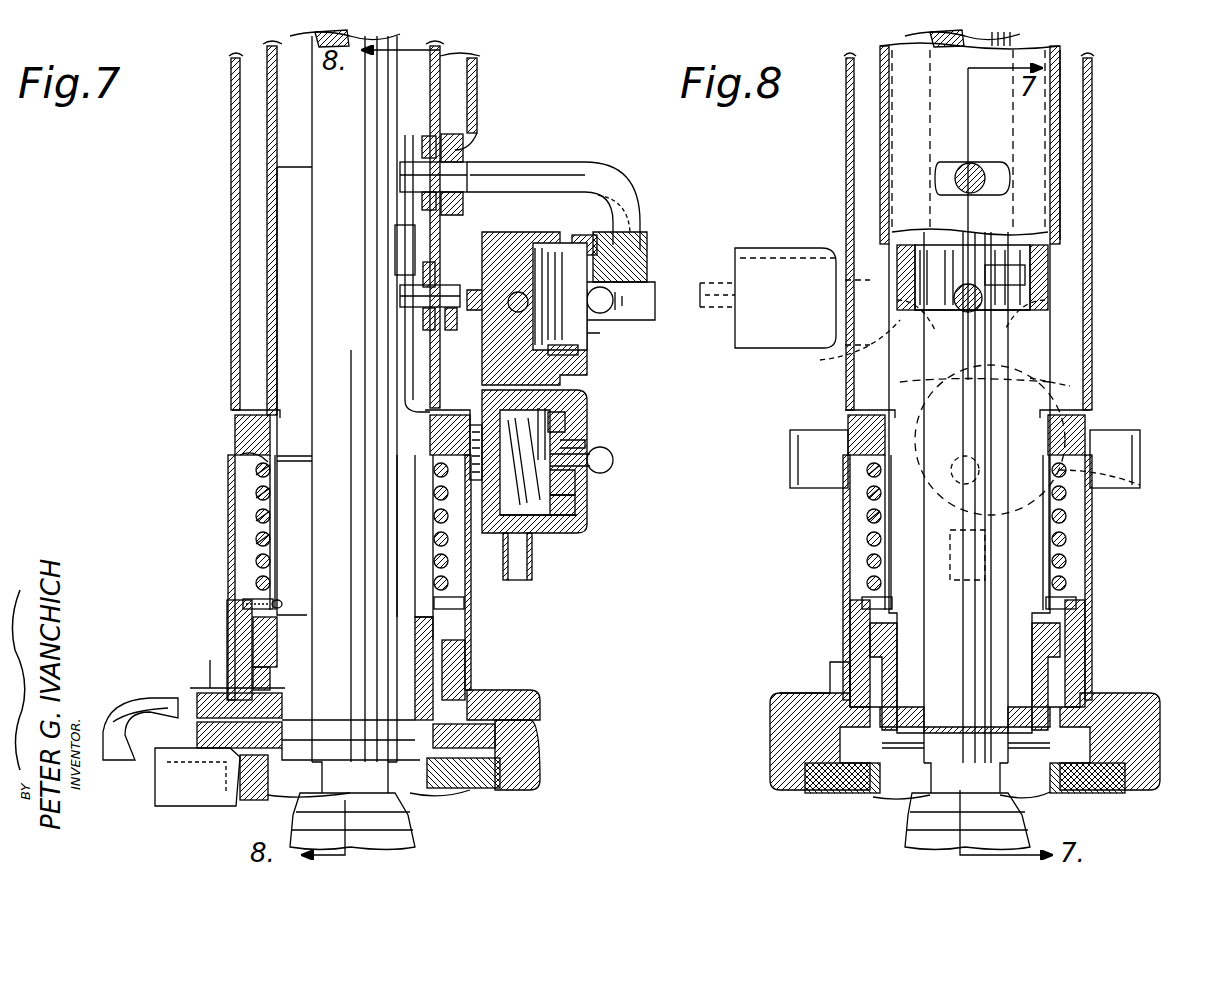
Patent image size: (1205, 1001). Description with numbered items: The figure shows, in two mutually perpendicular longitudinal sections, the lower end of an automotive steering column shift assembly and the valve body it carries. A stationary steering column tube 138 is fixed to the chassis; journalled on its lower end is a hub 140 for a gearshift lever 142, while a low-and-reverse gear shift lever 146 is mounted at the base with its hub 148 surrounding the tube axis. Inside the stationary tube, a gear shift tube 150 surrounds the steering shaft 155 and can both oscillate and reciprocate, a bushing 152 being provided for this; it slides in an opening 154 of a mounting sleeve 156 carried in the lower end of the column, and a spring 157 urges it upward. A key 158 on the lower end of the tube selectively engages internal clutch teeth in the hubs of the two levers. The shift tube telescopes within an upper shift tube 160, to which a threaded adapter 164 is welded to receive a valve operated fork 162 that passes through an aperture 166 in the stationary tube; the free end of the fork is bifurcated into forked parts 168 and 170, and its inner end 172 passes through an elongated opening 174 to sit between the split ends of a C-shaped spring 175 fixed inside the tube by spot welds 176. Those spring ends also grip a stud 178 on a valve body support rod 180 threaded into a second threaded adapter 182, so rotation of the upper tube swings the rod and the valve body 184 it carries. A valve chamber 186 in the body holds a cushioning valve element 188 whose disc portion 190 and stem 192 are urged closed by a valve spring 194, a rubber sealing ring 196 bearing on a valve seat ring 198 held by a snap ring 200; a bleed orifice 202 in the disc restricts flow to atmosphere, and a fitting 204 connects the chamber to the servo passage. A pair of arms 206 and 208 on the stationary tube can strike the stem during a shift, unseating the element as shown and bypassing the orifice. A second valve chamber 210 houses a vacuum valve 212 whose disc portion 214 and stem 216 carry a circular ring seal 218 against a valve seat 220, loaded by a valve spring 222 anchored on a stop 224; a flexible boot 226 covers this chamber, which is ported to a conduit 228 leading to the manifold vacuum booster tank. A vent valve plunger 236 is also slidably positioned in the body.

In FIG. 7, the steering column tube 138 is at (236, 398).
In FIG. 8, the steering column tube 138 is at (1090, 215).
In FIG. 7, the hub 140 is at (212, 690).
In FIG. 8, the hub 140 is at (828, 690).
In FIG. 7, the gearshift lever 142 is at (145, 705).
In FIG. 7, the low-and-reverse gear shift lever 146 is at (232, 805).
In FIG. 7, the hub 148 is at (472, 788).
In FIG. 8, the hub 148 is at (835, 772).
In FIG. 7, the gear shift tube 150 is at (254, 455).
In FIG. 8, the gear shift tube 150 is at (980, 302).
In FIG. 7, the bushing 152 is at (238, 422).
In FIG. 8, the bushing 152 is at (848, 420).
In FIG. 7, the opening 154 is at (260, 598).
In FIG. 7, the steering shaft 155 is at (318, 537).
In FIG. 8, the steering shaft 155 is at (935, 537).
In FIG. 7, the mounting sleeve 156 is at (238, 620).
In FIG. 8, the mounting sleeve 156 is at (850, 640).
In FIG. 7, the spring 157 is at (258, 482).
In FIG. 8, the spring 157 is at (872, 512).
In FIG. 7, the key 158 is at (458, 690).
In FIG. 8, the key 158 is at (812, 714).
In FIG. 7, the upper shift tube 160 is at (468, 78).
In FIG. 8, the upper shift tube 160 is at (1070, 85).
In FIG. 7, the valve operated fork 162 is at (585, 162).
In FIG. 7, the threaded adapter 164 is at (465, 152).
In FIG. 7, the aperture 166 is at (440, 373).
In FIG. 8, the forked part 168 is at (870, 378).
In FIG. 7, the forked part 170 is at (640, 300).
In FIG. 8, the forked part 170 is at (1030, 295).
In FIG. 7, the inner end of fork 172 is at (412, 168).
In FIG. 8, the inner end of fork 172 is at (990, 168).
In FIG. 7, the elongated opening 174 is at (428, 142).
In FIG. 8, the elongated opening 174 is at (1000, 190).
In FIG. 7, the C-shaped spring 175 is at (428, 270).
In FIG. 8, the C-shaped spring 175 is at (980, 262).
In FIG. 7, the spot welds 176 is at (277, 213).
In FIG. 8, the spot welds 176 is at (1035, 280).
In FIG. 7, the stud 178 is at (410, 296).
In FIG. 8, the stud 178 is at (975, 320).
In FIG. 7, the valve body support rod 180 is at (400, 252).
In FIG. 7, the threaded adapter 182 is at (432, 330).
In FIG. 7, the valve body 184 is at (575, 368).
In FIG. 8, the valve body 184 is at (1060, 392).
In FIG. 7, the valve chamber 186 is at (400, 517).
In FIG. 7, the cushioning valve element 188 is at (578, 467).
In FIG. 7, the disc portion 190 is at (570, 485).
In FIG. 7, the stem 192 is at (613, 466).
In FIG. 8, the stem 192 is at (1100, 430).
In FIG. 7, the valve spring 194 is at (470, 418).
In FIG. 7, the sealing ring 196 is at (570, 505).
In FIG. 7, the valve seat ring 198 is at (555, 410).
In FIG. 7, the snap ring 200 is at (560, 522).
In FIG. 7, the bleed orifice 202 is at (560, 432).
In FIG. 7, the fitting 204 is at (532, 560).
In FIG. 8, the fitting 204 is at (1150, 505).
In FIG. 7, the arm 206 is at (590, 446).
In FIG. 8, the arm 206 is at (1145, 488).
In FIG. 8, the arm 208 is at (795, 488).
In FIG. 7, the second valve chamber 210 is at (580, 318).
In FIG. 7, the vacuum valve 212 is at (598, 322).
In FIG. 7, the disc portion 214 is at (560, 255).
In FIG. 7, the stem 216 is at (618, 312).
In FIG. 7, the circular ring seal 218 is at (518, 292).
In FIG. 8, the circular ring seal 218 is at (730, 285).
In FIG. 7, the valve seat 220 is at (537, 250).
In FIG. 7, the valve spring 222 is at (625, 265).
In FIG. 7, the stop 224 is at (620, 240).
In FIG. 7, the flexible boot 226 is at (622, 205).
In FIG. 7, the conduit 228 is at (385, 352).
In FIG. 8, the vent valve plunger 236 is at (830, 362).